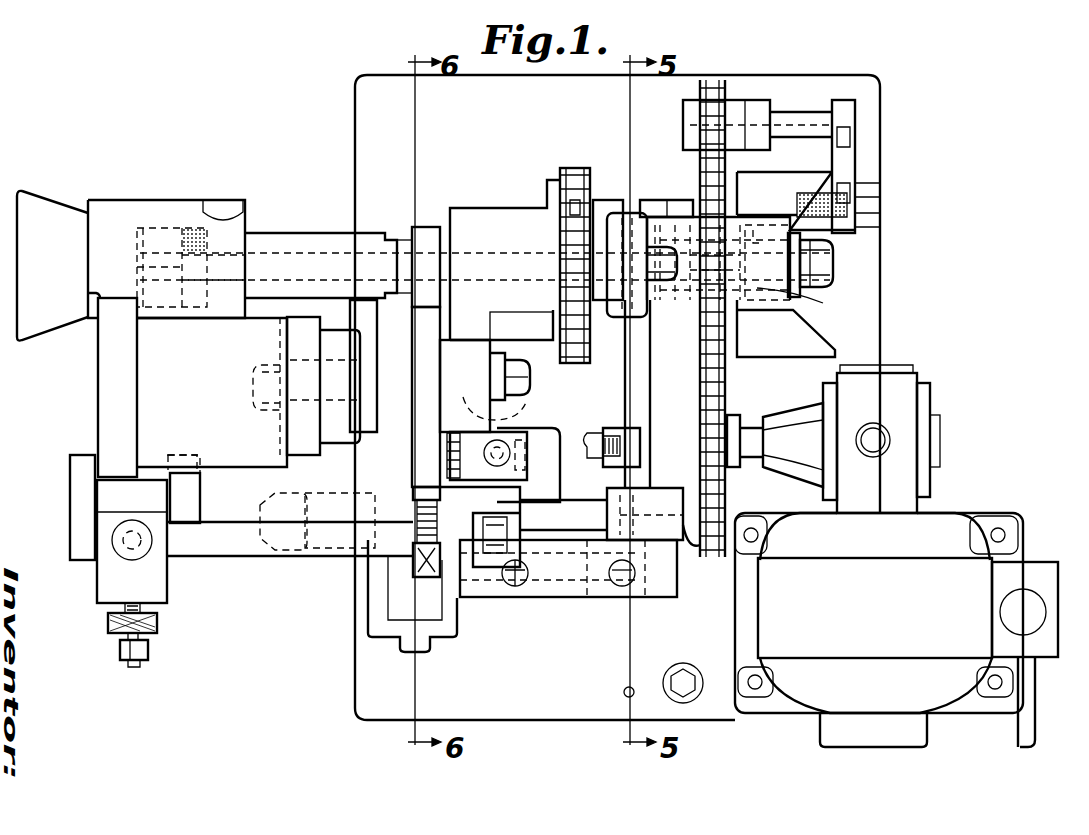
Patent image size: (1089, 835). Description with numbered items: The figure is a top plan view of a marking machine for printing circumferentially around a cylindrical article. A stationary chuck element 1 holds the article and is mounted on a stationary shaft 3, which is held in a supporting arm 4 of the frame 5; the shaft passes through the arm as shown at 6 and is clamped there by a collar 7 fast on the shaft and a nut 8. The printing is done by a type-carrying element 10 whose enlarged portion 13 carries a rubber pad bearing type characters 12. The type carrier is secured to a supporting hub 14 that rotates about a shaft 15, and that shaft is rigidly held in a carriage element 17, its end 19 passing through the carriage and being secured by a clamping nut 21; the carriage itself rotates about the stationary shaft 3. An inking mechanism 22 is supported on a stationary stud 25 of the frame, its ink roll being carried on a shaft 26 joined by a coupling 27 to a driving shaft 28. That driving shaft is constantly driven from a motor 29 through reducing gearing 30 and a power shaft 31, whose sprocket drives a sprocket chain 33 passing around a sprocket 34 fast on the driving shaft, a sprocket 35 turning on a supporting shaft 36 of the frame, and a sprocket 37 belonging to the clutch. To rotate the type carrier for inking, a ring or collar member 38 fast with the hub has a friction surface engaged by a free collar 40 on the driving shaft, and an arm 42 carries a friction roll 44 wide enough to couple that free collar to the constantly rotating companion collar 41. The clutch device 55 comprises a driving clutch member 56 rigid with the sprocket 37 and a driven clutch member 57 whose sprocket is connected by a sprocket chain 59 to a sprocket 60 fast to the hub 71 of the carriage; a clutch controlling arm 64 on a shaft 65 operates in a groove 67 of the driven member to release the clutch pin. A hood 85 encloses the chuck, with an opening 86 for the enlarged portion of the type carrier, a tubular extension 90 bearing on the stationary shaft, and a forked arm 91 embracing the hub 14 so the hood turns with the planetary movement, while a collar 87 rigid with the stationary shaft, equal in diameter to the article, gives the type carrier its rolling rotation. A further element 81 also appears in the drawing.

The stationary chuck element 1 is at (168, 228).
The stationary shaft 3 is at (490, 252).
The supporting arm 4 is at (790, 302).
The frame 5 is at (855, 312).
The extension of shaft through arm 6 is at (758, 232).
The collar 7 is at (748, 215).
The nut 8 is at (826, 262).
The type-carrying element 10 is at (160, 378).
The type characters 12 is at (103, 370).
The enlarged portion 13 is at (110, 445).
The supporting hub 14 is at (340, 345).
The shaft 15 is at (320, 400).
The carriage element 17 is at (502, 340).
The end of shaft 19 is at (522, 408).
The clamping nut 21 is at (531, 386).
The inking mechanism 22 is at (95, 568).
The stationary stud 25 is at (246, 545).
The shaft 26 is at (218, 510).
The coupling 27 is at (280, 493).
The driving shaft 28 is at (575, 508).
The motor 29 is at (915, 545).
The reducing gearing 30 is at (872, 410).
The power shaft 31 is at (748, 430).
The sprocket chain 33 is at (722, 390).
The sprocket 34 is at (720, 520).
The sprocket 35 is at (708, 115).
The supporting shaft 36 is at (800, 115).
The sprocket 37 is at (728, 337).
The ring or collar member 38 is at (488, 346).
The free collar 40 is at (413, 508).
The companion collar 41 is at (392, 472).
The arm 42 is at (400, 645).
The friction roll 44 is at (400, 598).
The clutch device 55 is at (660, 192).
The driving clutch member 56 is at (684, 203).
The driven clutch member 57 is at (606, 205).
The sprocket chain 59 is at (583, 200).
The sprocket 60 is at (572, 197).
The clutch controlling arm 64 is at (640, 380).
The shaft 65 is at (568, 575).
The groove 67 is at (630, 207).
The hub 71 is at (495, 218).
The plate 81 is at (452, 335).
The hood 85 is at (78, 215).
The opening 86 is at (88, 295).
The collar 87 is at (425, 235).
The tubular extension 90 is at (287, 240).
The forked arm 91 is at (350, 293).